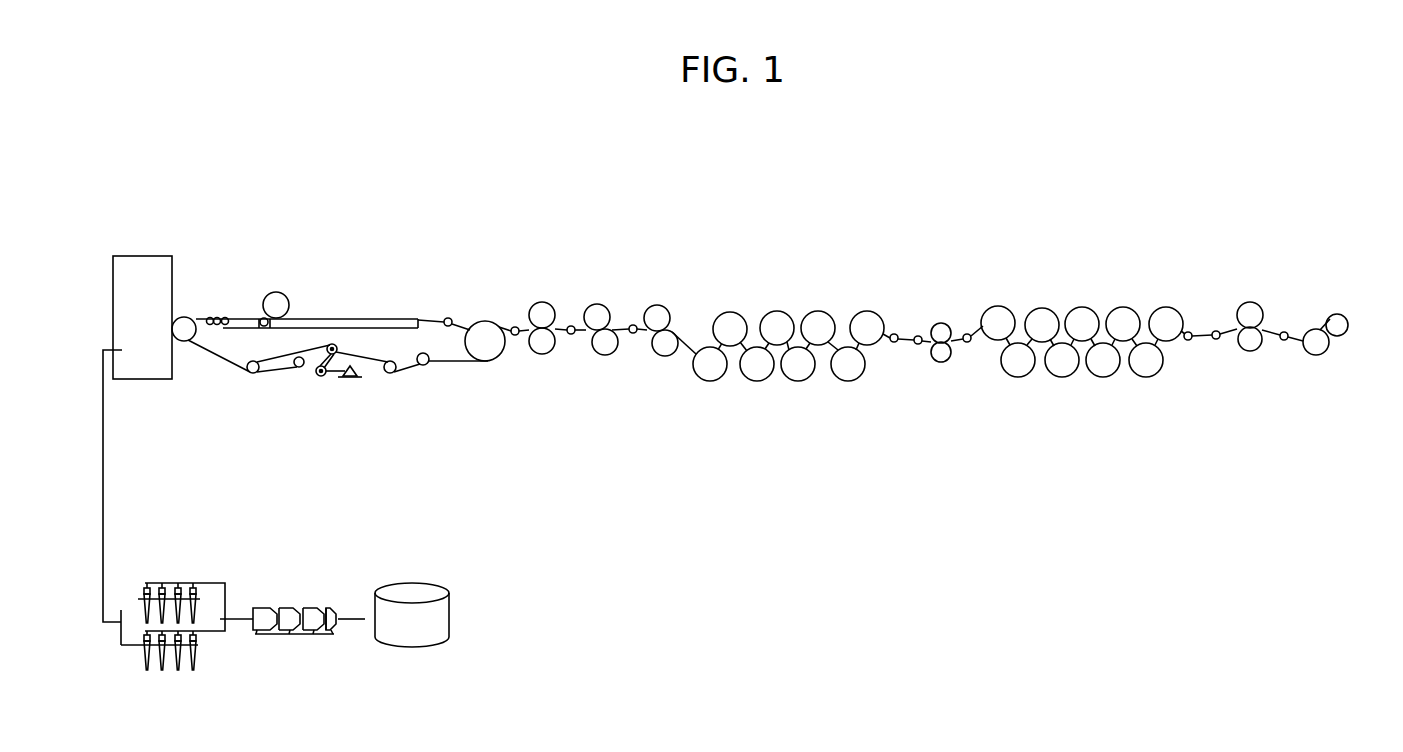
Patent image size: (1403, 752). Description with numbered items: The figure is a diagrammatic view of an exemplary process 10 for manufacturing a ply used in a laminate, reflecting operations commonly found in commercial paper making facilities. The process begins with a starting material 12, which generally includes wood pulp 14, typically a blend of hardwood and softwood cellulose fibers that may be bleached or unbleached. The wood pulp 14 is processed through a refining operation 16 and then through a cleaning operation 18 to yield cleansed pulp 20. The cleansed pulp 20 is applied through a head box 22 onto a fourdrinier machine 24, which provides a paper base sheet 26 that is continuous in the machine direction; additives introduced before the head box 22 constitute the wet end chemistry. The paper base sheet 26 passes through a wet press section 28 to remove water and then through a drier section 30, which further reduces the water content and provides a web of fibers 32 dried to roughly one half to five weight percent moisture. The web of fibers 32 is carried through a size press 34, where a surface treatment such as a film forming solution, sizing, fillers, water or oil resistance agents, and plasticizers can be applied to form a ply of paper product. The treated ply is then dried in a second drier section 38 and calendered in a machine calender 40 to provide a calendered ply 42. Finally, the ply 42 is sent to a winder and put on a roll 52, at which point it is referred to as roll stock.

The process for making a ply 10 is at (1010, 176).
The starting material 12 is at (397, 587).
The wood pulp 14 is at (427, 590).
The refining operation 16 is at (291, 576).
The cleaning operation 18 is at (190, 558).
The cleansed pulp 20 is at (105, 498).
The head box 22 is at (143, 256).
The fourdrinier machine 24 is at (326, 278).
The paper base sheet 26 is at (427, 317).
The wet press section 28 is at (580, 290).
The drier section 30 is at (776, 277).
The web of fibers 32 is at (903, 335).
The size press 34 is at (944, 312).
The second drier section 38 is at (1095, 287).
The machine calender 40 is at (1241, 291).
The calendered ply 42 is at (1271, 337).
The roll 52 is at (1340, 323).